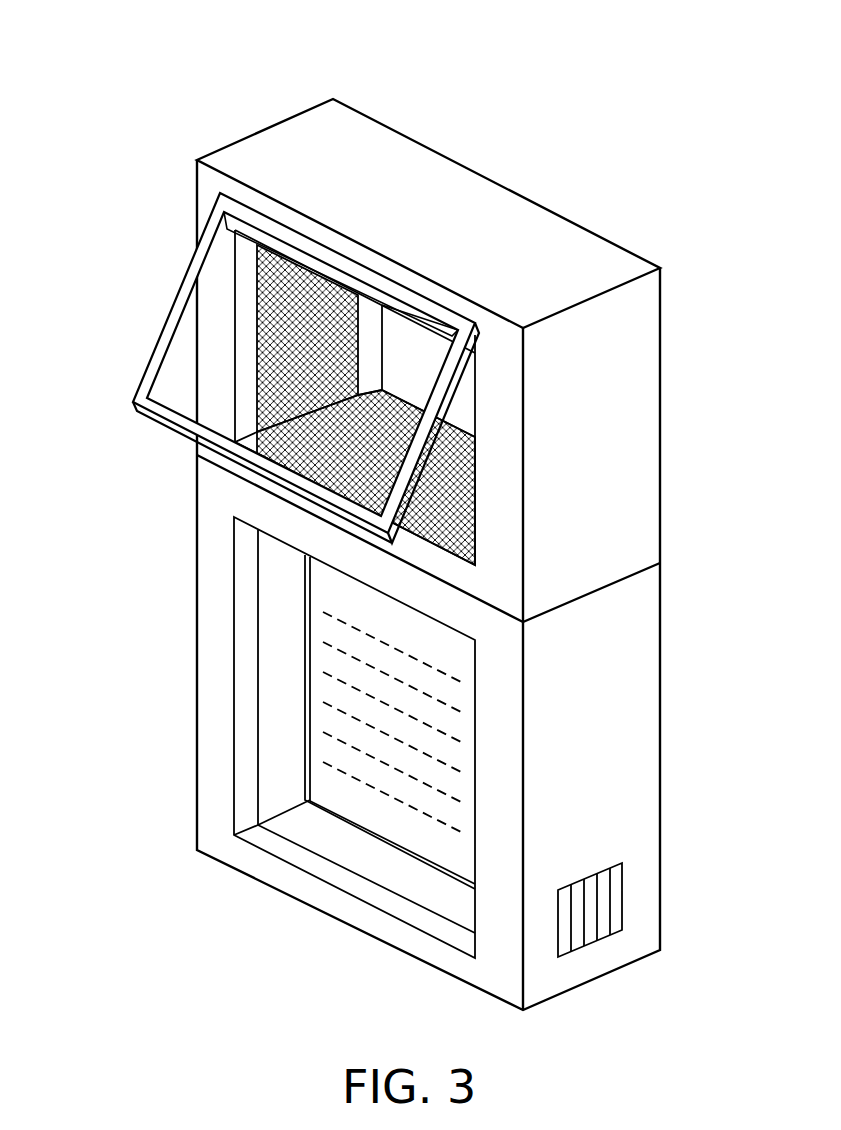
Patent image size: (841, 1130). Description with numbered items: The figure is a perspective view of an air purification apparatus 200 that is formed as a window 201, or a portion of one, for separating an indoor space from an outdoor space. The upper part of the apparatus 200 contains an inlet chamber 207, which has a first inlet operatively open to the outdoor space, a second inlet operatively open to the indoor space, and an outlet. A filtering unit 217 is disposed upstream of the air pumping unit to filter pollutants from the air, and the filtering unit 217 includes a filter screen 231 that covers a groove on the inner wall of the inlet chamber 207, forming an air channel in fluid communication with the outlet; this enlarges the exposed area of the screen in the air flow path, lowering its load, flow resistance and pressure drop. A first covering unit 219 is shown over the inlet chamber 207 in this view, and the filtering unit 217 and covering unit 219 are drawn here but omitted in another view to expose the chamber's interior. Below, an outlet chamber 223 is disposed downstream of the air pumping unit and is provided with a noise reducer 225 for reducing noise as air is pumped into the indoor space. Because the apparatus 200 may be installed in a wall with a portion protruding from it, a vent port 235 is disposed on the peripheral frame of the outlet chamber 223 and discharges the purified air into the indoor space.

The air purification apparatus 200 is at (391, 516).
The window 201 is at (575, 250).
The filter screen 231 is at (256, 262).
The inlet chamber 207 is at (299, 356).
The filtering unit 217 is at (480, 466).
The first covering unit 219 is at (146, 388).
The outlet chamber 223 is at (289, 714).
The noise reducer 225 is at (327, 665).
The vent port 235 is at (612, 902).